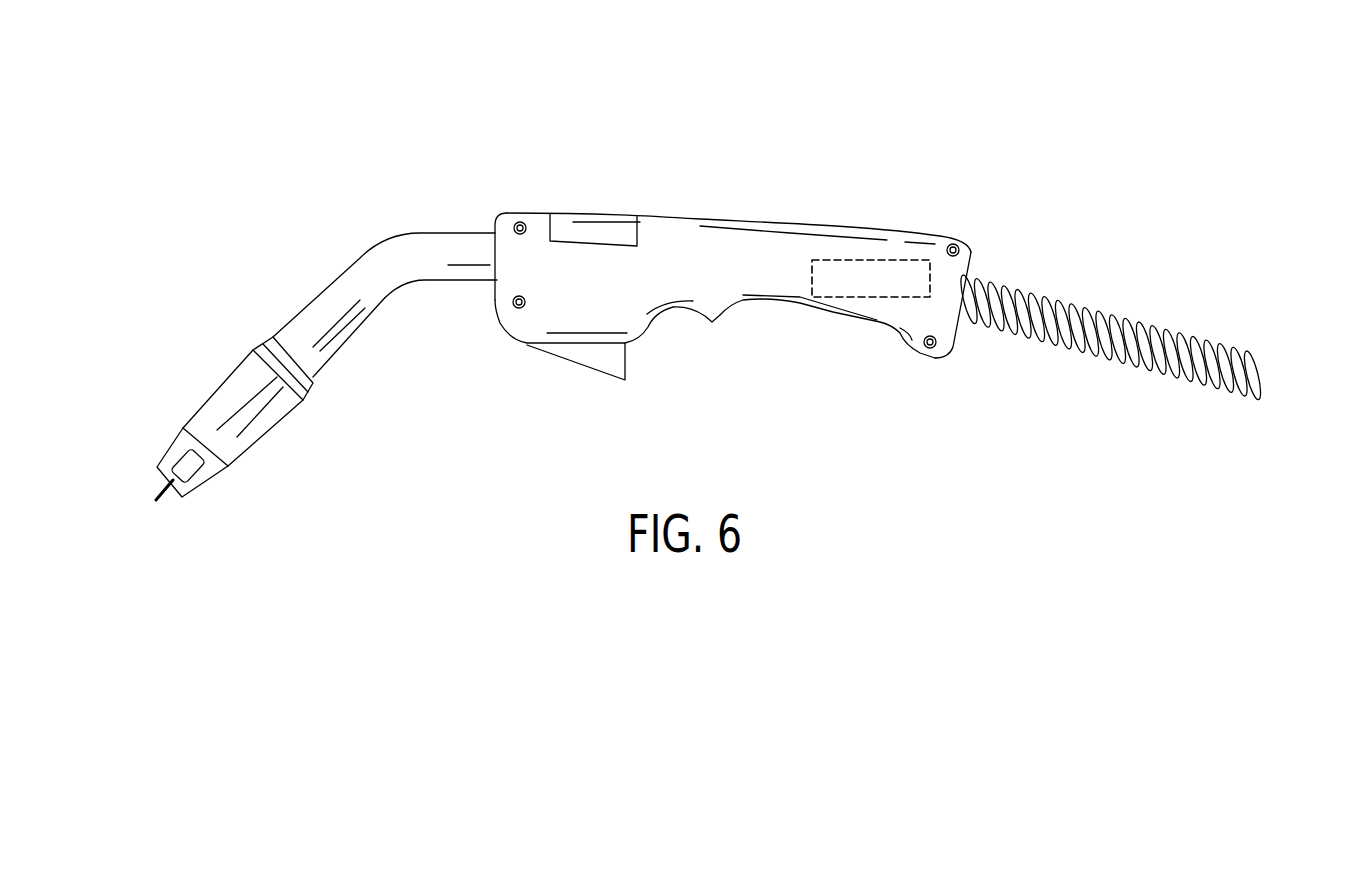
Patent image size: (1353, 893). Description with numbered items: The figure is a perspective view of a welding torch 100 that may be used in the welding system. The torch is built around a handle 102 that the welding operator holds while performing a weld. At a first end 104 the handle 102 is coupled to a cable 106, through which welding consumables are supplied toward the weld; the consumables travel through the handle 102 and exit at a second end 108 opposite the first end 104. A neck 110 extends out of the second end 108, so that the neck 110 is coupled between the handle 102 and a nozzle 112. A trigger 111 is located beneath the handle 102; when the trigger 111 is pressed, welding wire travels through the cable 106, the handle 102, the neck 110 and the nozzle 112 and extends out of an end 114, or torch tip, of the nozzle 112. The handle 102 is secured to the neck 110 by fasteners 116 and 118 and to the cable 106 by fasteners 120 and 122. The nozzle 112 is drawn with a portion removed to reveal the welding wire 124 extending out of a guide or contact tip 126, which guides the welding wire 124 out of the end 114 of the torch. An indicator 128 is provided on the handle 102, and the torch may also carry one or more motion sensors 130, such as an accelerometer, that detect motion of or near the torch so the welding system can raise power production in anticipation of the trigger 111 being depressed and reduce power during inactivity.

The welding torch 100 is at (574, 70).
The handle 102 is at (745, 250).
The first end 104 is at (951, 271).
The cable 106 is at (1142, 368).
The second end 108 is at (495, 229).
The neck 110 is at (321, 298).
The trigger 111 is at (587, 353).
The nozzle 112 is at (218, 387).
The end 114 is at (170, 494).
The fastener 116 is at (523, 225).
The fastener 118 is at (519, 308).
The fastener 120 is at (954, 245).
The fastener 122 is at (929, 348).
The welding wire 124 is at (158, 500).
The contact tip 126 is at (201, 484).
The indicator 128 is at (593, 232).
The motion sensors 130 is at (873, 300).